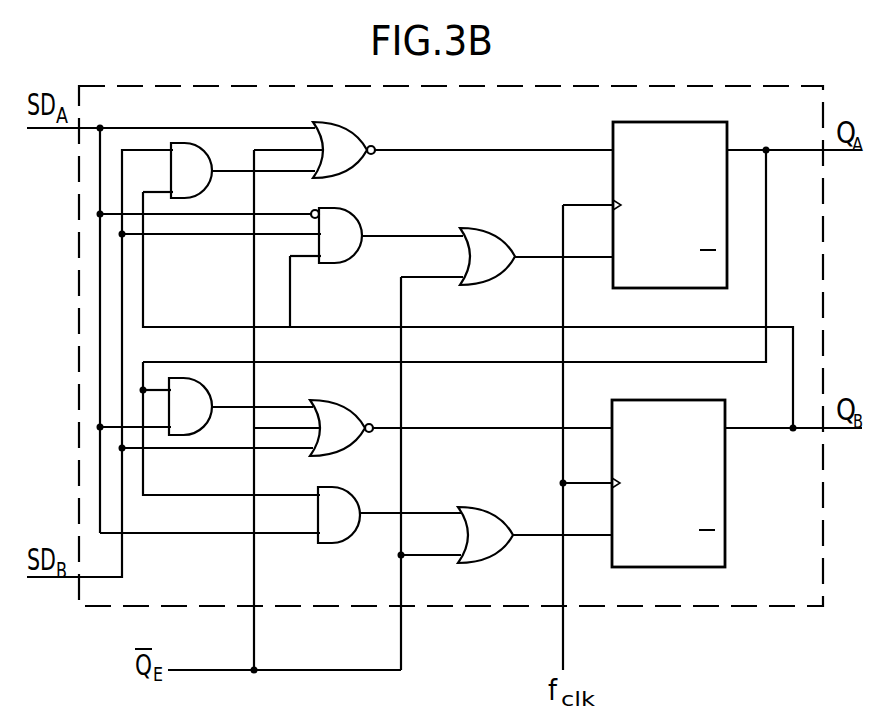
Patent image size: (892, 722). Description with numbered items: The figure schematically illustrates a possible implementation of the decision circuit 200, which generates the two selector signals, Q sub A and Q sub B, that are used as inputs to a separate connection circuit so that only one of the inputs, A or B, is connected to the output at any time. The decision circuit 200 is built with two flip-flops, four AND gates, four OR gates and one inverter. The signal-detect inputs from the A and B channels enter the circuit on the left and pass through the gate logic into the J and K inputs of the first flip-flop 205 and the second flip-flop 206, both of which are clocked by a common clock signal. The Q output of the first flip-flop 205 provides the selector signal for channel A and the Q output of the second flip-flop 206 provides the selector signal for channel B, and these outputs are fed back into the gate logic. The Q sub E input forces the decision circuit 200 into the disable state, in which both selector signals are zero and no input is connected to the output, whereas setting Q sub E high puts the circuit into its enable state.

The decision circuit 200 is at (270, 83).
The flip-flop 205 is at (663, 125).
The flip-flop 206 is at (657, 558).